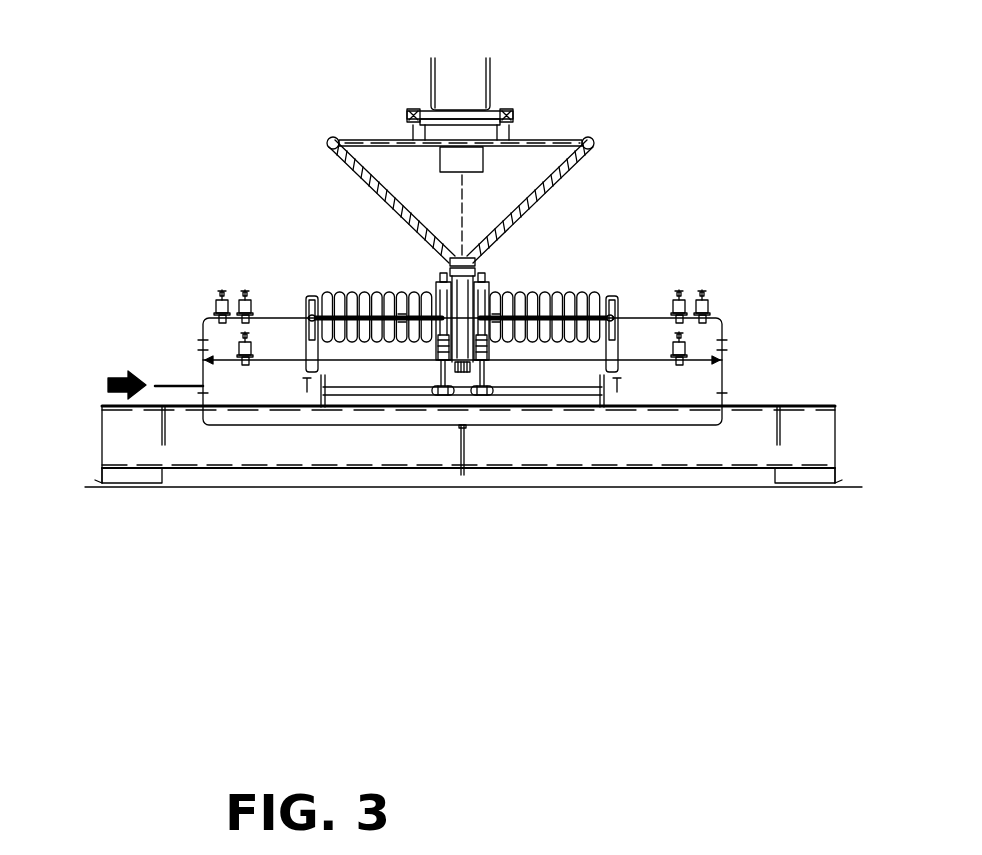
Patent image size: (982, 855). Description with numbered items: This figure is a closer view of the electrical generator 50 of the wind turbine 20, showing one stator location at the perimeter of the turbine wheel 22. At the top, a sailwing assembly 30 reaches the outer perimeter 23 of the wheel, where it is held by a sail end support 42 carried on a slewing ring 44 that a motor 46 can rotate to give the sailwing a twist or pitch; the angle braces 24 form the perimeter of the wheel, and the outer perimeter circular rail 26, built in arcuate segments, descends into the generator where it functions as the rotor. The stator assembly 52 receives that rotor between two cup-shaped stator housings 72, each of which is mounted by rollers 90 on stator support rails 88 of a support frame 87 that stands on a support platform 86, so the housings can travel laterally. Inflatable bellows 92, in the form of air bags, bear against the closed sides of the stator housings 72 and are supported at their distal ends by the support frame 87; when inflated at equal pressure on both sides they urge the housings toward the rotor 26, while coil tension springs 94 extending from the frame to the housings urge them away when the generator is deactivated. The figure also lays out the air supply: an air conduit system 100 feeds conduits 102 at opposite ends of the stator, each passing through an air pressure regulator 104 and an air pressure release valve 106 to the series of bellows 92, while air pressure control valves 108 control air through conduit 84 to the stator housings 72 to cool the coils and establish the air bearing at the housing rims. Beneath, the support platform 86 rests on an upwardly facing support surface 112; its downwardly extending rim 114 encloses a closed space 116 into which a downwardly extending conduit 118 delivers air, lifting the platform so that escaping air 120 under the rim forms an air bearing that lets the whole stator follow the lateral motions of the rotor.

The wind turbine 20 is at (325, 171).
The turbine wheel 22 is at (512, 51).
The outer perimeter 23 is at (572, 162).
The angle braces 24 is at (548, 190).
The outer perimeter circular rail 26 is at (480, 276).
The sailwing assemblies 30 is at (437, 72).
The sail end support 42 is at (495, 112).
The slewing ring 44 is at (512, 132).
The motor 46 is at (478, 165).
The electrical generator 50 is at (700, 244).
The stator assembly 52 is at (311, 268).
The stator housing 72 is at (437, 298).
The conduit 84 is at (315, 360).
The support platform 86 is at (755, 418).
The support frame 87 is at (305, 327).
The stator support rails 88 is at (601, 389).
The rollers 90 is at (440, 386).
The inflatable bellows 92 is at (360, 296).
The coil tension springs 94 is at (400, 322).
The air conduit system 100 is at (203, 373).
The conduits 102 is at (294, 316).
The air pressure regulator 104 is at (243, 297).
The air pressure release valve 106 is at (218, 303).
The air pressure control valves 108 is at (246, 356).
The support surface 112 is at (575, 488).
The downwardly extending rim 114 is at (130, 472).
The closed space 116 is at (468, 479).
The downwardly extending conduit 118 is at (466, 443).
The escaping air 120 is at (89, 482).